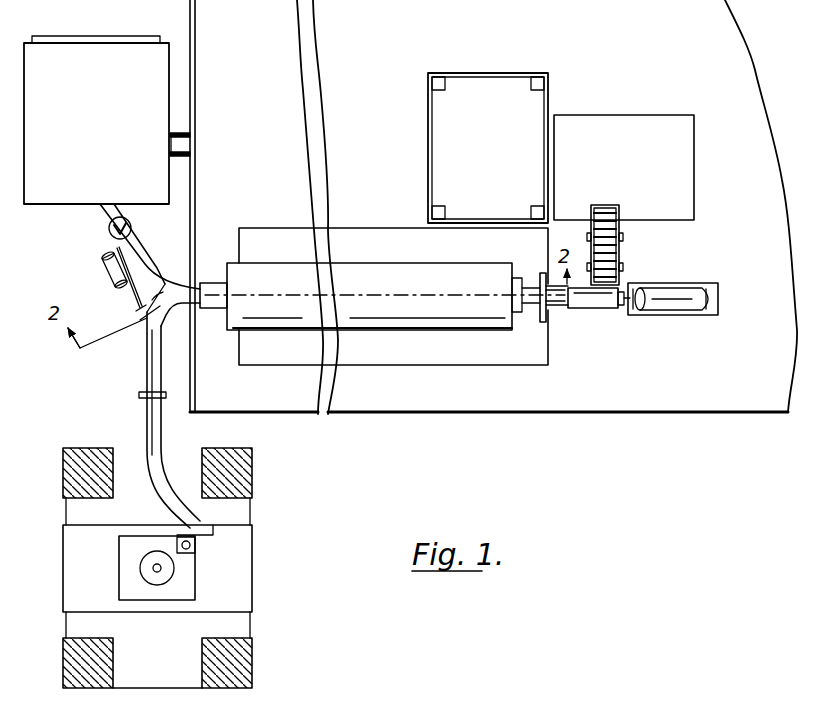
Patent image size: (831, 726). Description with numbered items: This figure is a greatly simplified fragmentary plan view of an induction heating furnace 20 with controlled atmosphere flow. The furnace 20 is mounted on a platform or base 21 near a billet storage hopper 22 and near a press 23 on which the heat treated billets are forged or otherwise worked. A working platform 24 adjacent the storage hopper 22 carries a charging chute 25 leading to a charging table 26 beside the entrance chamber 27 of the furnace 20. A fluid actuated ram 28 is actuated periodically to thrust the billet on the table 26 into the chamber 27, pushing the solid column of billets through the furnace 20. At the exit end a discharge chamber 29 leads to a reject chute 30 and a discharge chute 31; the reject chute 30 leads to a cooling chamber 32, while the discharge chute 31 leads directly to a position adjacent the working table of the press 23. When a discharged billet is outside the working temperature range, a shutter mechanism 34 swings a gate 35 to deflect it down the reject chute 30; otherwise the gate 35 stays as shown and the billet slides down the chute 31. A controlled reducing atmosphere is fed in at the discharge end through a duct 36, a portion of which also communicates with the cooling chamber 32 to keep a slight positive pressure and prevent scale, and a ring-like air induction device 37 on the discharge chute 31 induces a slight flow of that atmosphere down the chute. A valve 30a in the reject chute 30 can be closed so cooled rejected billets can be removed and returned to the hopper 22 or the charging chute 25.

The induction heating furnace 20 is at (367, 246).
The platform or base 21 is at (512, 368).
The billet storage hopper 22 is at (561, 73).
The press 23 is at (265, 509).
The working platform 24 is at (695, 220).
The charging chute 25 is at (619, 255).
The charging table 26 is at (607, 310).
The entrance chamber 27 is at (546, 315).
The fluid actuated ram 28 is at (670, 283).
The discharge chamber 29 is at (212, 283).
The reject chute 30 is at (150, 266).
The valve 30a is at (109, 238).
The discharge chute 31 is at (147, 358).
The cooling chamber 32 is at (70, 206).
The shutter mechanism 34 is at (108, 287).
The gate 35 is at (148, 313).
The duct 36 is at (177, 157).
The ring-like air induction device 37 is at (139, 395).